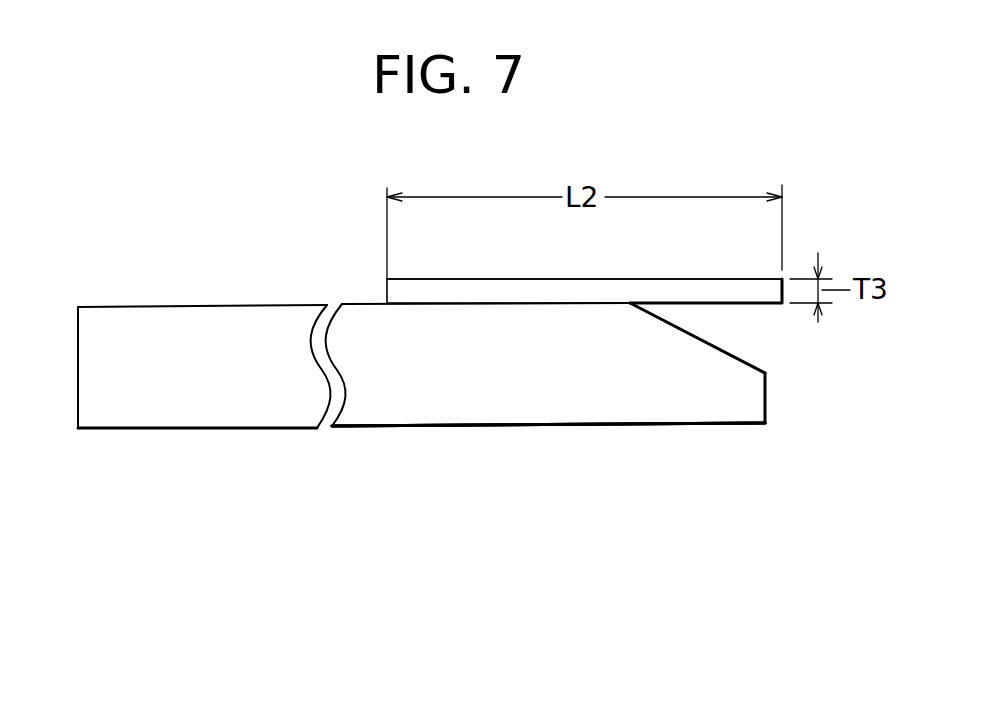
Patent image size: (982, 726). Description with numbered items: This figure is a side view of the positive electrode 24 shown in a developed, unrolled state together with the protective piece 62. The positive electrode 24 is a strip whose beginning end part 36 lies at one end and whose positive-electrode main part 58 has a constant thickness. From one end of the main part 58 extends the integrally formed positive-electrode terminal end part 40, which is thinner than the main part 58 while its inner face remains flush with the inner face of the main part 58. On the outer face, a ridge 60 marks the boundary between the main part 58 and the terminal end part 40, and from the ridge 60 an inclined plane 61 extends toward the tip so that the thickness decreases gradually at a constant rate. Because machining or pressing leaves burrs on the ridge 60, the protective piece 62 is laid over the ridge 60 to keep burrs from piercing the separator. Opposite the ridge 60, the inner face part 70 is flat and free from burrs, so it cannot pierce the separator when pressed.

The positive electrode 24 is at (557, 478).
The positive-electrode beginning end part 36 is at (106, 408).
The positive-electrode terminal end part 40 is at (738, 402).
The positive-electrode main part 58 is at (365, 402).
The ridge 60 is at (632, 297).
The inclined plane 61 is at (722, 347).
The protective piece 62 is at (497, 288).
The inner face part 70 is at (630, 427).